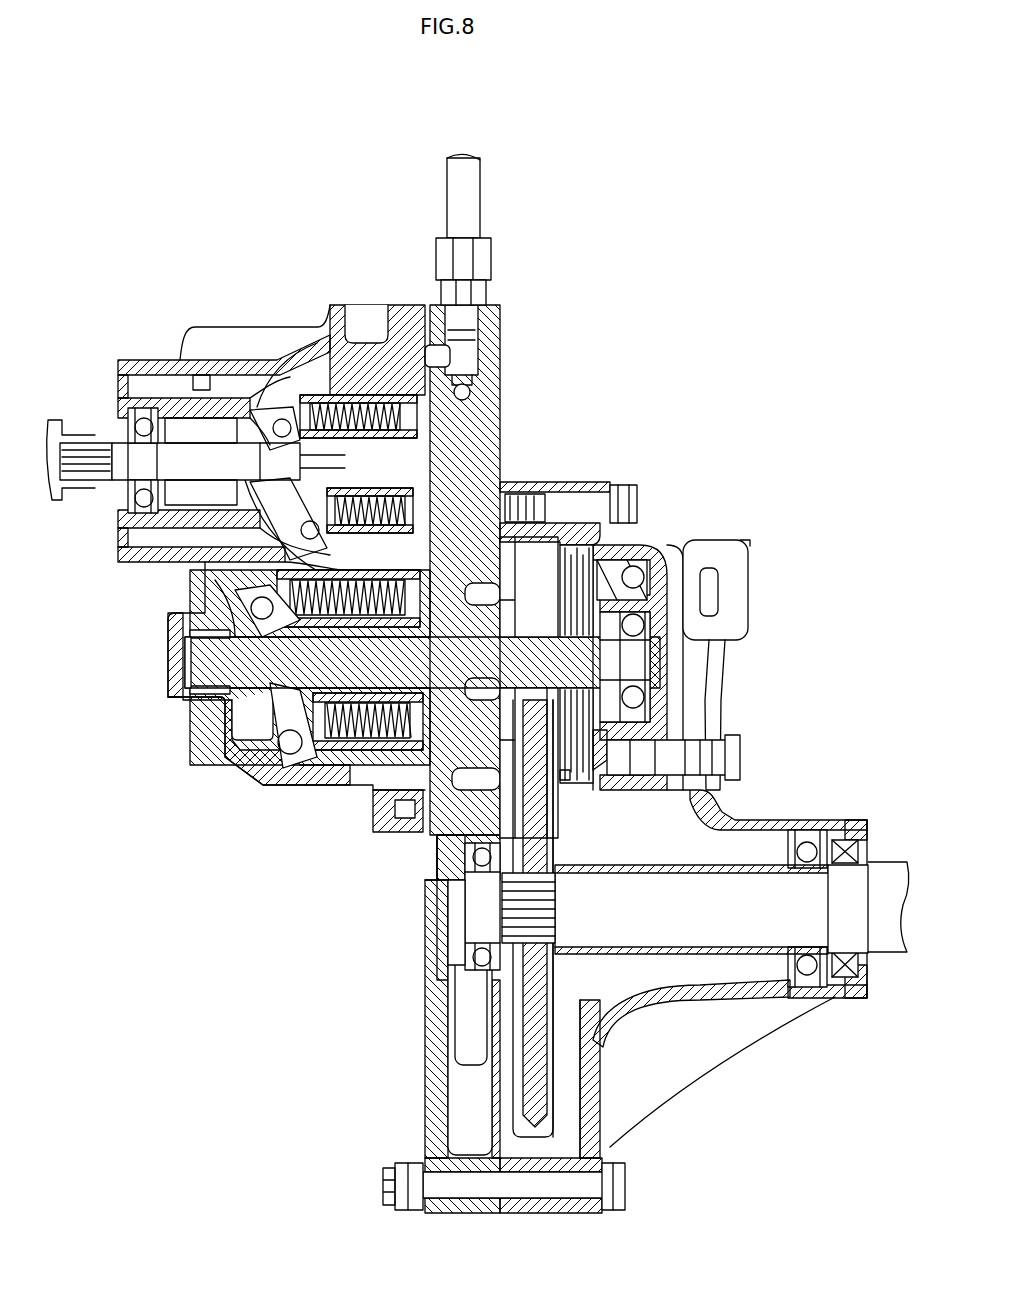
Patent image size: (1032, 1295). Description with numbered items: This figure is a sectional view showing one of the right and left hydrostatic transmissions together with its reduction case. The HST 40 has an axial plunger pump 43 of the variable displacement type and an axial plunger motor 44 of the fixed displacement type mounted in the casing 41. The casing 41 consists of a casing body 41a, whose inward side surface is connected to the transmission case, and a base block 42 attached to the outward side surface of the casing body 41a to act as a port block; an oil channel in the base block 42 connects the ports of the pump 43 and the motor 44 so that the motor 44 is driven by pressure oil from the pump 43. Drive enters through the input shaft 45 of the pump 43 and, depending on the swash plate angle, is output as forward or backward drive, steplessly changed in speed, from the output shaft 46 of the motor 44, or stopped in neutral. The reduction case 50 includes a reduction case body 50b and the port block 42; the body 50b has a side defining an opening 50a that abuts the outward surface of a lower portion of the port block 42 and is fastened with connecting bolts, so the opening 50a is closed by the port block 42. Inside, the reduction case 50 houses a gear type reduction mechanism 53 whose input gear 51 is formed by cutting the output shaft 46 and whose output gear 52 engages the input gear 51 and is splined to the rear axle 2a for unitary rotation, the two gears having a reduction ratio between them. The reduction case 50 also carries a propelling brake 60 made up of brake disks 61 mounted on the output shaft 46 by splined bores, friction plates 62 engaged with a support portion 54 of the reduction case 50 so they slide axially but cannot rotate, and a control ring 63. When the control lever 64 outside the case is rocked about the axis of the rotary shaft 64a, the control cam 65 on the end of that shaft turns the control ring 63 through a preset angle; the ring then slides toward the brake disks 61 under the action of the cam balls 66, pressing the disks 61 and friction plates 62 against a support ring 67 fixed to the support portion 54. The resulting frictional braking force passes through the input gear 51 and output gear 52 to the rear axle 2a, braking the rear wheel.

The HST 40 is at (327, 280).
The casing 41 is at (368, 517).
The casing body 41a is at (222, 358).
The base block 42 is at (503, 357).
The axial plunger pump 43 is at (350, 383).
The axial plunger motor 44 is at (350, 742).
The input shaft 45 is at (190, 468).
The output shaft 46 is at (520, 655).
The input gear 51 is at (540, 636).
The support portion 54 is at (557, 548).
The friction plates 62 is at (585, 573).
The brake disks 61 is at (612, 565).
The control ring 63 is at (633, 578).
The cam balls 66 is at (685, 555).
The control lever 64 is at (748, 586).
The rotary shaft 64a is at (740, 758).
The support ring 67 is at (580, 778).
The control cam 65 is at (615, 762).
The propelling brake 60 is at (584, 783).
The rear axle 2a is at (598, 912).
The reduction case 50 is at (747, 1042).
The opening 50a is at (498, 1040).
The reduction case body 50b is at (702, 1012).
The gear type reduction mechanism 53 is at (557, 1020).
The output gear 52 is at (545, 1128).